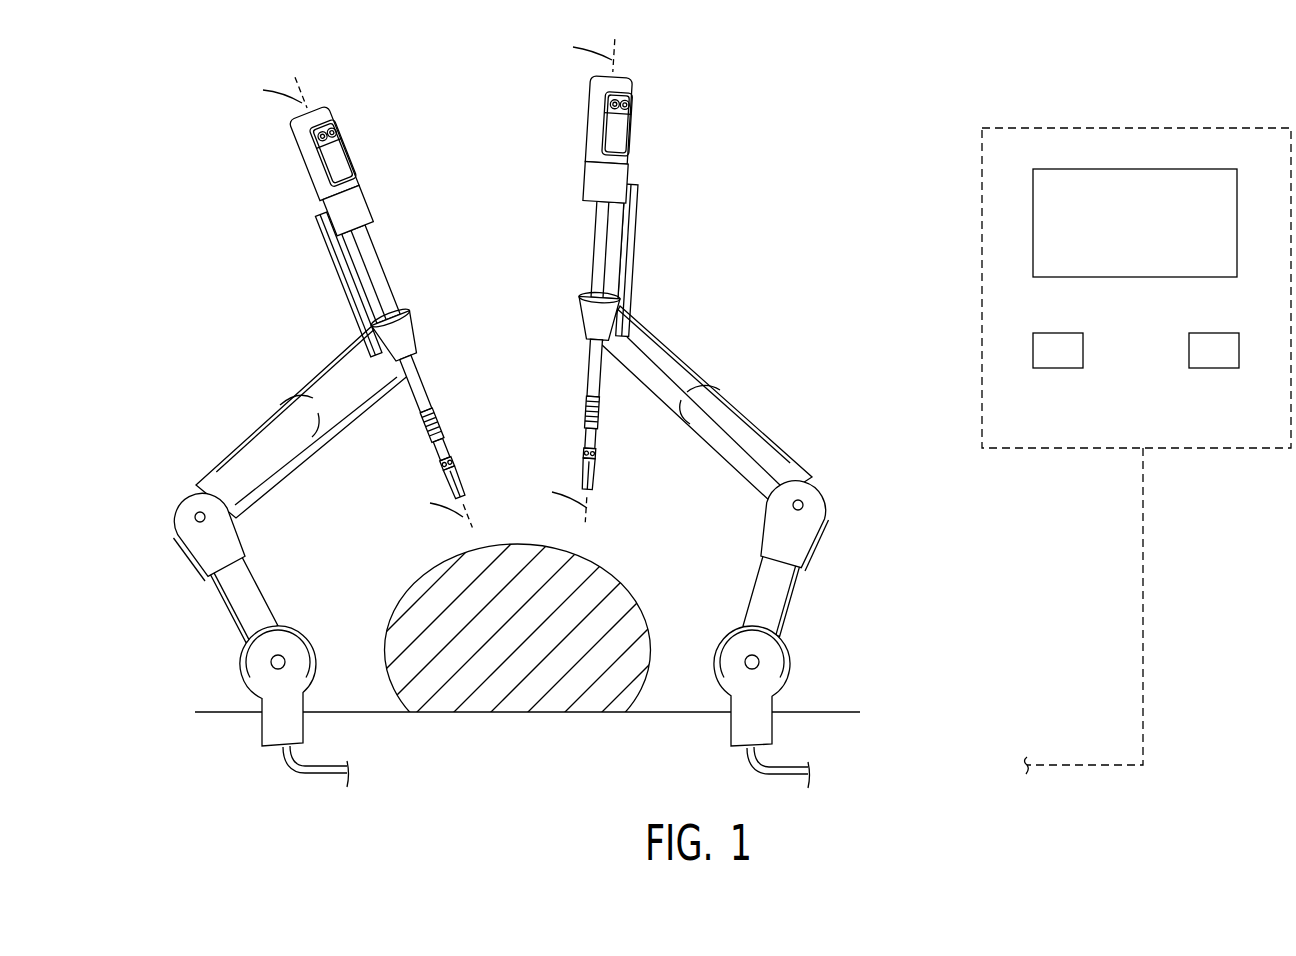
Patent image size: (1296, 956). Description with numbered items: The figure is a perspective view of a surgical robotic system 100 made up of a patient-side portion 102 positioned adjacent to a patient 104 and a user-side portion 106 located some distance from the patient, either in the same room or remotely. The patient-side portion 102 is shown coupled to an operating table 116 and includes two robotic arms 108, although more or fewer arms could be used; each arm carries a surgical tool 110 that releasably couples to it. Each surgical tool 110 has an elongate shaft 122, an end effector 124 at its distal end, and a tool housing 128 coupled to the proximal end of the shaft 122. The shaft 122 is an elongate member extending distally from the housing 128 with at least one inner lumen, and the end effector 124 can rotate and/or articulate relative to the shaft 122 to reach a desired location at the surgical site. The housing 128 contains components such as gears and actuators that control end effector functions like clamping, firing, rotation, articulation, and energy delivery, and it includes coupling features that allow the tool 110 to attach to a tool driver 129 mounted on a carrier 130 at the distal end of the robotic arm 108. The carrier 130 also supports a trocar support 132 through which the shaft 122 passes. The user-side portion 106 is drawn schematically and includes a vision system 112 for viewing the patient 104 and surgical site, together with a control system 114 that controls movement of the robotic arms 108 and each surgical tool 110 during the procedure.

The surgical robotic system 100 is at (134, 112).
The patient-side portion 102 is at (776, 118).
The patient 104 is at (613, 580).
The user-side portion 106 is at (1136, 412).
The robotic arm 108 is at (248, 418).
The surgical tool 110 is at (481, 270).
The vision system 112 is at (1072, 168).
The control system 114 is at (1047, 368).
The operating table 116 is at (825, 708).
The elongate shaft 122 is at (372, 270).
The end effector 124 is at (443, 480).
The tool housing 128 is at (315, 175).
The tool driver 129 is at (355, 205).
The carrier 130 is at (338, 278).
The trocar support 132 is at (402, 330).